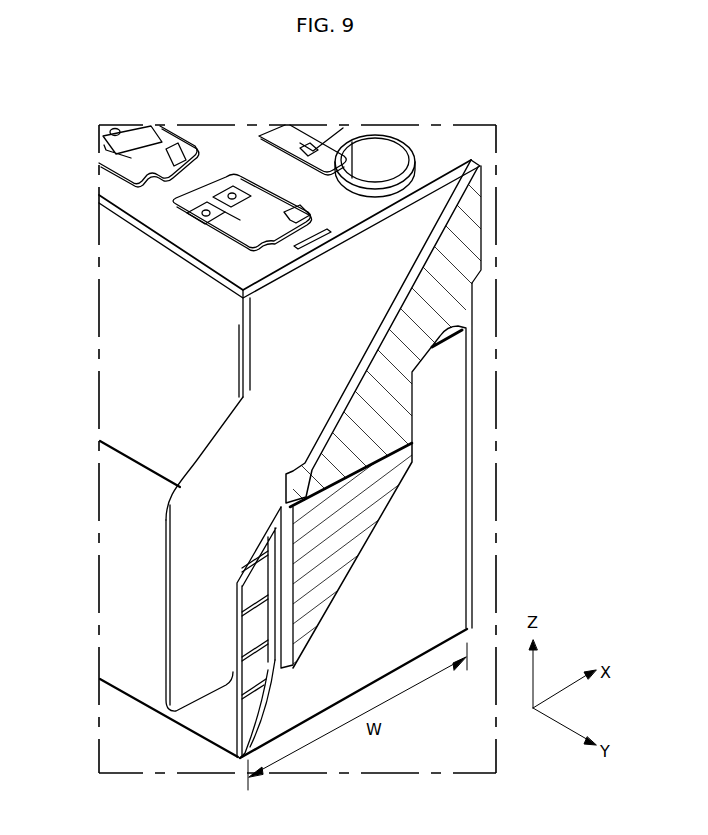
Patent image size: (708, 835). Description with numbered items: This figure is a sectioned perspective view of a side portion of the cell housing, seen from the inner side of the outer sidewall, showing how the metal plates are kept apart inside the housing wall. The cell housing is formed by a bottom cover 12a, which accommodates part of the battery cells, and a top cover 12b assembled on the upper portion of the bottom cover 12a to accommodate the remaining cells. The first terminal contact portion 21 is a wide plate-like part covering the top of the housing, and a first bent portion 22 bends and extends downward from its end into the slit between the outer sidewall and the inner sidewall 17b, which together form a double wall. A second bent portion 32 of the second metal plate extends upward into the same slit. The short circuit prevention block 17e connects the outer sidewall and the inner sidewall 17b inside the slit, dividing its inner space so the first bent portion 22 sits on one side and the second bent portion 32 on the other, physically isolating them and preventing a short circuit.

The first terminal contact portion 21 is at (401, 128).
The short circuit prevention block 17e is at (445, 290).
The second bent portion 32 is at (443, 426).
The top cover 12b is at (134, 314).
The first bent portion 22 is at (185, 532).
The bottom cover 12a is at (134, 574).
The inner sidewall 17b is at (257, 667).